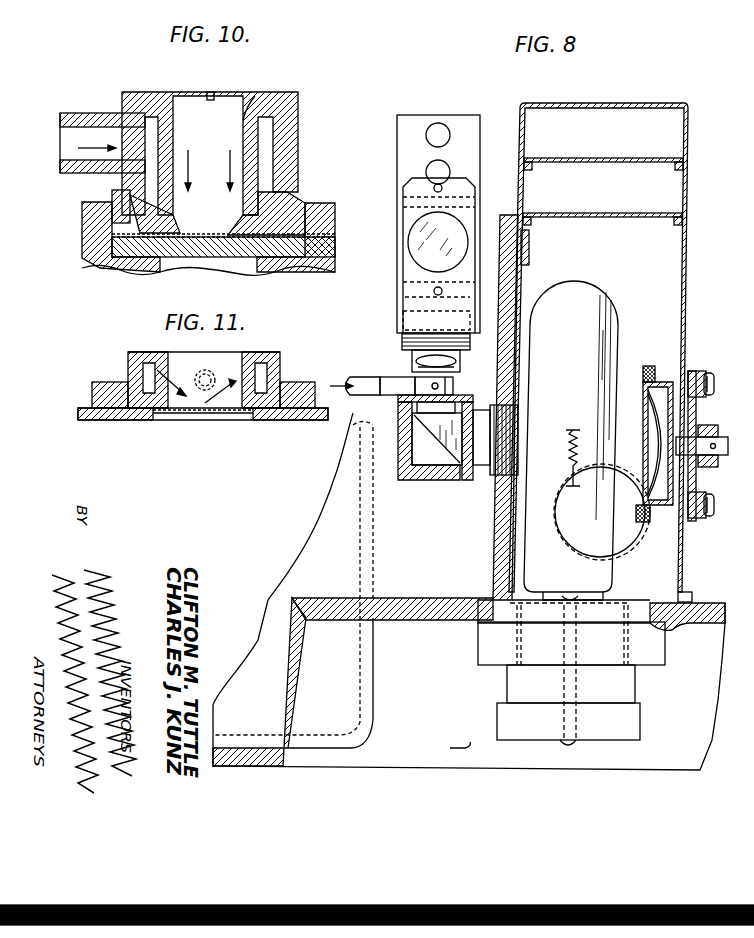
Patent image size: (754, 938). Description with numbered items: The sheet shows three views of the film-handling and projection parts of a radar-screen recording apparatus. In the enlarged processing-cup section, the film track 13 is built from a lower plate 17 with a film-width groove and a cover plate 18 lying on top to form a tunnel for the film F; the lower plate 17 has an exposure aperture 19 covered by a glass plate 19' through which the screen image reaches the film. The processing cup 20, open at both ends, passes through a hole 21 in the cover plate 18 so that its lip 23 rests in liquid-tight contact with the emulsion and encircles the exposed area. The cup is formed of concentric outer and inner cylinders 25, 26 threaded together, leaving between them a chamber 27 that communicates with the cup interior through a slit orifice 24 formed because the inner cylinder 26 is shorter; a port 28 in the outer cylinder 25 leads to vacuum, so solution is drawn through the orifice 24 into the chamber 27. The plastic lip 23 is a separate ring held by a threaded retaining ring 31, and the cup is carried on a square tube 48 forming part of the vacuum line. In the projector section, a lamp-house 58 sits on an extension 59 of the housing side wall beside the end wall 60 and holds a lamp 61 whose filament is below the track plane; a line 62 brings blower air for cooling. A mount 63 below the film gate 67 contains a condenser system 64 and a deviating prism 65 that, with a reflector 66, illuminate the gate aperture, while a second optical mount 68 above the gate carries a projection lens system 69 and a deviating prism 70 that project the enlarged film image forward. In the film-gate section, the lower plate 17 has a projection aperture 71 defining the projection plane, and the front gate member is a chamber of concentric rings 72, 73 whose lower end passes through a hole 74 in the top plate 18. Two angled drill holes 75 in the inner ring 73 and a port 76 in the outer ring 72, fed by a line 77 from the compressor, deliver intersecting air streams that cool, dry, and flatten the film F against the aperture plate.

In FIG. 10, the film track 13 is at (100, 258).
In FIG. 8, the film track 13 is at (398, 399).
In FIG. 10, the lower plate 17 is at (320, 265).
In FIG. 10, the cover plate 18 is at (320, 204).
In FIG. 11, the cover plate 18 is at (93, 393).
In FIG. 10, the exposure aperture 19 is at (208, 268).
In FIG. 10, the glass plate 19' is at (223, 280).
In FIG. 10, the processing cup 20 is at (298, 125).
In FIG. 10, the hole 21 is at (310, 219).
In FIG. 10, the lip 23 is at (165, 236).
In FIG. 10, the slit orifice 24 is at (182, 236).
In FIG. 10, the outer cylinder 25 is at (275, 153).
In FIG. 10, the inner cylinder 26 is at (258, 142).
In FIG. 10, the chamber 27 is at (265, 167).
In FIG. 10, the port 28 is at (140, 135).
In FIG. 10, the threaded retaining ring 31 is at (113, 195).
In FIG. 8, the square tube 48 is at (392, 380).
In FIG. 8, the lamp-house 58 is at (687, 274).
In FIG. 8, the extension 59 is at (508, 215).
In FIG. 8, the end wall 60 is at (576, 248).
In FIG. 8, the lamp 61 is at (571, 440).
In FIG. 8, the line 62 is at (618, 552).
In FIG. 8, the mount 63 is at (482, 468).
In FIG. 8, the condenser system 64 is at (478, 467).
In FIG. 8, the deviating prism 65 is at (446, 452).
In FIG. 8, the reflector 66 is at (662, 422).
In FIG. 8, the film gate 67 is at (470, 397).
In FIG. 8, the second optical mount 68 is at (412, 364).
In FIG. 8, the projection lens system 69 is at (405, 343).
In FIG. 8, the deviating prism 70 is at (411, 255).
In FIG. 11, the projection aperture 71 is at (230, 421).
In FIG. 8, the projection aperture 71 is at (410, 413).
In FIG. 11, the outer ring 72 is at (282, 365).
In FIG. 8, the outer ring 72 is at (462, 393).
In FIG. 11, the inner ring 73 is at (160, 360).
In FIG. 11, the hole 74 is at (135, 398).
In FIG. 11, the drill holes 75 is at (170, 362).
In FIG. 11, the port 76 is at (208, 370).
In FIG. 8, the line 77 is at (352, 378).
In FIG. 10, the film F is at (190, 240).
In FIG. 11, the film F is at (185, 421).
In FIG. 8, the film F is at (460, 393).